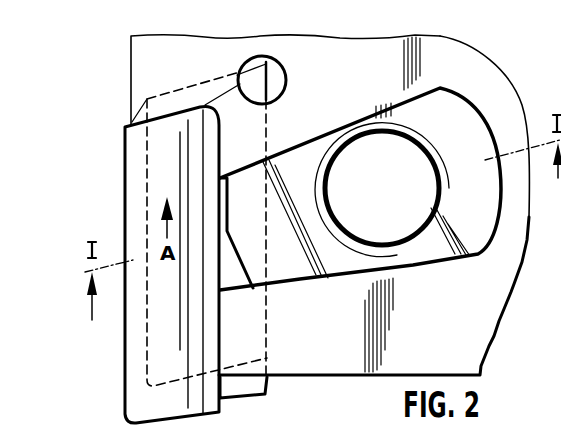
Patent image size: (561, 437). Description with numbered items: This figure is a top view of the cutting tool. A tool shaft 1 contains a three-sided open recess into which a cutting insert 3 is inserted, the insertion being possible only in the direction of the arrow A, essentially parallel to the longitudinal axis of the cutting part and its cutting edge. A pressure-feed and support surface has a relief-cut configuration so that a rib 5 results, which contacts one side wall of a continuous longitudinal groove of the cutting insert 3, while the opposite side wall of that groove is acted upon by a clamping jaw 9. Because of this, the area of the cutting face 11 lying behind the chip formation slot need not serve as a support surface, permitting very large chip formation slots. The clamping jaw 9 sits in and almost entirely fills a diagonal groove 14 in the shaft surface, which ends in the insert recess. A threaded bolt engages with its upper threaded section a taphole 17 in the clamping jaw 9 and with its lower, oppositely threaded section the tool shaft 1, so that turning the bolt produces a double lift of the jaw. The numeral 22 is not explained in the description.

The tool shaft 1 is at (142, 63).
The cutting insert 3 is at (137, 215).
The rib 5 is at (233, 113).
The clamping jaw 9 is at (327, 133).
The cutting face 11 is at (207, 343).
The diagonal groove 14 is at (231, 292).
The taphole 17 is at (378, 124).
The stop face 22 is at (127, 177).